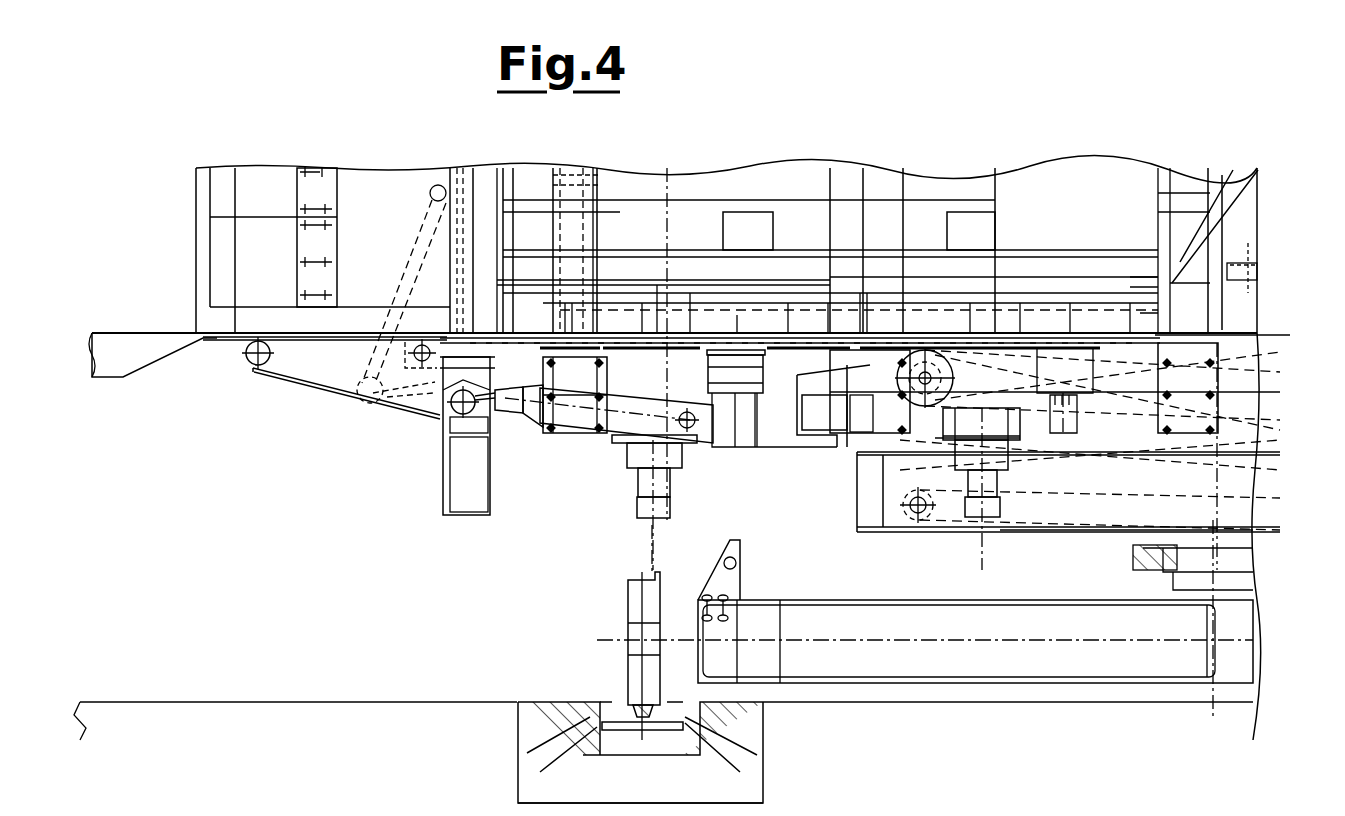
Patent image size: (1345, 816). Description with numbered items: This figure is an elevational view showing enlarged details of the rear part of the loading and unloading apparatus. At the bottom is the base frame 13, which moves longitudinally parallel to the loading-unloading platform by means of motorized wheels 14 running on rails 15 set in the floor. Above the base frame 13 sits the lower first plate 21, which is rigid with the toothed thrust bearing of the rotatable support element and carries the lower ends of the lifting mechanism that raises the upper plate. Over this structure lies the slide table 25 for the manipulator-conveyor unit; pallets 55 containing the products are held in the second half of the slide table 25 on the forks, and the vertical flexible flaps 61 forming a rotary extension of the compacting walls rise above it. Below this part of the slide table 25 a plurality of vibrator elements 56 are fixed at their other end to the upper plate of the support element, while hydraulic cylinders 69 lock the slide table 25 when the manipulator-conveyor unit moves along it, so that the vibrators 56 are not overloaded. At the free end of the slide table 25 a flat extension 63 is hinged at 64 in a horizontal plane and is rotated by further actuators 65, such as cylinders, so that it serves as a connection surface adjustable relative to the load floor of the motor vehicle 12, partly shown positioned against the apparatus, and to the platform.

The vertical flexible flaps 61 is at (224, 238).
The pallets 55 is at (1003, 307).
The slide table 25 is at (1235, 335).
The motor vehicle 12 is at (153, 336).
The flat extension 63 is at (310, 343).
The hinge 64 is at (447, 420).
The further actuators 65 is at (583, 417).
The vibrator elements 56 is at (566, 395).
The hydraulic cylinders 69 is at (663, 485).
The lower first plate 21 is at (895, 522).
The motorized wheels 14 is at (635, 592).
The rails 15 is at (628, 712).
The base frame 13 is at (1063, 665).